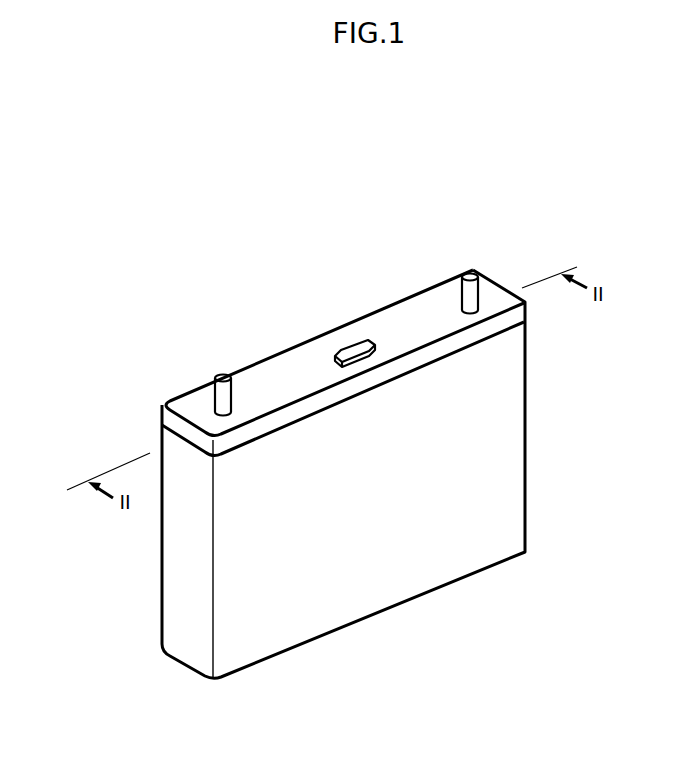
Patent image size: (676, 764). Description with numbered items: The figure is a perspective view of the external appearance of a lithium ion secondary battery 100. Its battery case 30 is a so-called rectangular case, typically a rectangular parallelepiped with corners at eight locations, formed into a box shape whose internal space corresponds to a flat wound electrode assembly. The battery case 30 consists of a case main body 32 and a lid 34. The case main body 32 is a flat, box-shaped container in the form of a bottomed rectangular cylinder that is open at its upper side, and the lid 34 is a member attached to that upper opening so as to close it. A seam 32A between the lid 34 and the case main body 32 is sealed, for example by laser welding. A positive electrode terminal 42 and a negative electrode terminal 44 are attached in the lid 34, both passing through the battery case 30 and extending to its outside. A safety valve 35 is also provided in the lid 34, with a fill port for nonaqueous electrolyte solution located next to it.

The lithium ion secondary battery 100 is at (447, 192).
The battery case 30 is at (526, 475).
The case main body 32 is at (397, 575).
The seam 32A is at (527, 322).
The lid 34 is at (420, 317).
The safety valve 35 is at (348, 345).
The positive electrode terminal 42 is at (222, 378).
The negative electrode terminal 44 is at (470, 275).